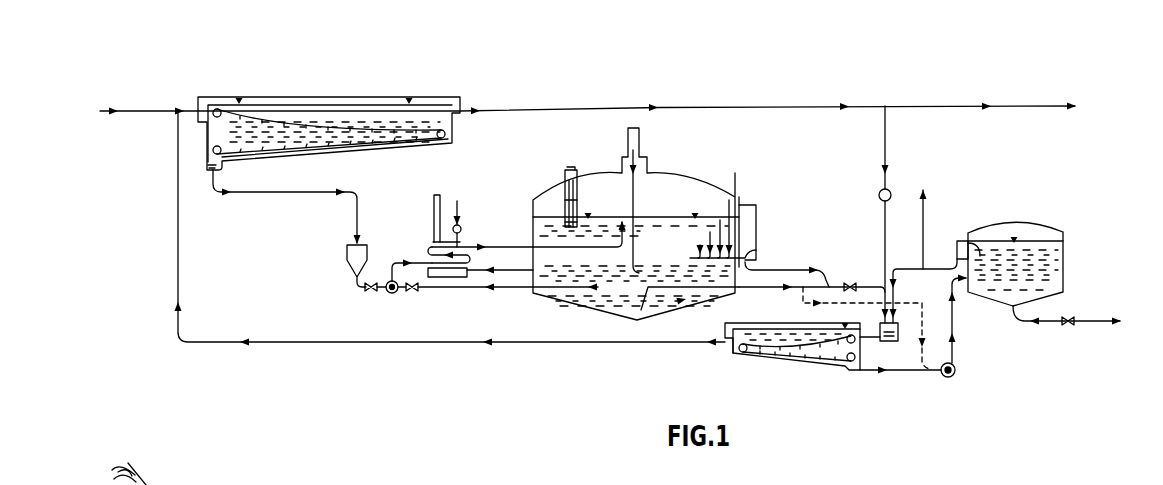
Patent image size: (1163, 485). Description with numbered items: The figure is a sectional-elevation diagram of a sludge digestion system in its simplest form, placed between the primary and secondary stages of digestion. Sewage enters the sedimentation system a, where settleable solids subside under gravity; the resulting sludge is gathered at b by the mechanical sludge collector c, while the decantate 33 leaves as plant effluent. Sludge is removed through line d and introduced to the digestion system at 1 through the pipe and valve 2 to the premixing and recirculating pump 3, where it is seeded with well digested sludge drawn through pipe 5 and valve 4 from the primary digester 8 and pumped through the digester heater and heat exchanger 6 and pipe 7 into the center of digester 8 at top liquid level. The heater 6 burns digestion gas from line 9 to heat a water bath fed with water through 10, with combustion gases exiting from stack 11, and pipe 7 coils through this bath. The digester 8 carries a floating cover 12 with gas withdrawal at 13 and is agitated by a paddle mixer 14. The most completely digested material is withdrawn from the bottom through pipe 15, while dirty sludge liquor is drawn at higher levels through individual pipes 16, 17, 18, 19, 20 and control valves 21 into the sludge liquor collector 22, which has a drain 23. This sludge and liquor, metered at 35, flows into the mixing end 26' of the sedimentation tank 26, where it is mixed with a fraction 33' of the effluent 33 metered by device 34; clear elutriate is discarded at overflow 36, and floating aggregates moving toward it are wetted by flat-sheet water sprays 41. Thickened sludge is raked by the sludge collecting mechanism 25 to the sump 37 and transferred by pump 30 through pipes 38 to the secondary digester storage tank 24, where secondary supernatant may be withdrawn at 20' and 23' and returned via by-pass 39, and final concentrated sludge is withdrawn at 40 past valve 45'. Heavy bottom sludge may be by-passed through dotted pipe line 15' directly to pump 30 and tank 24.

The sedimentation system a is at (279, 103).
The sludge gathering point b is at (222, 174).
The mechanical sludge collector c is at (330, 150).
The sludge line d is at (294, 207).
The digestion system inlet 1 is at (349, 264).
The pipe and valve 2 is at (375, 295).
The premixing and recirculating pump 3 is at (396, 294).
The valve 4 is at (412, 295).
The pipe 5 is at (490, 291).
The digester heater and heat exchanger 6 is at (443, 253).
The pipe 7 is at (520, 246).
The primary or active digester 8 is at (532, 225).
The digestion gas line 9 is at (500, 263).
The water feed 10 is at (457, 216).
The stack 11 is at (432, 201).
The floating cover 12 is at (694, 183).
The gas withdrawal 13 is at (643, 165).
The paddle mixer 14 is at (578, 201).
The bottom withdrawal pipe 15 is at (763, 293).
The by-pass pipe line 15' is at (871, 327).
The sludge liquor withdrawal pipe 16 is at (660, 258).
The sludge liquor withdrawal pipe 17 is at (692, 248).
The sludge liquor withdrawal pipe 18 is at (703, 243).
The sludge liquor withdrawal pipe 19 is at (713, 236).
The sludge liquor withdrawal pipe 20 is at (720, 229).
The secondary supernatant withdrawal 20' is at (1015, 234).
The control valves 21 is at (756, 250).
The sludge liquor collector 22 is at (758, 230).
The drain 23 is at (787, 270).
The secondary supernatant withdrawal 23' is at (935, 282).
The secondary digester storage tank 24 is at (1066, 273).
The sludge collecting mechanism 25 is at (829, 364).
The sedimentation tank 26 is at (792, 355).
The mixing end 26' is at (880, 341).
The pump 30 is at (954, 378).
The decantate / plant effluent 33 is at (588, 101).
The effluent fraction 33' is at (874, 147).
The metering device 34 is at (874, 255).
The metering device 35 is at (857, 283).
The overflow 36 is at (450, 228).
The sedimentation tank sump 37 is at (862, 385).
The pipes 38 is at (919, 333).
The by-pass 39 is at (935, 228).
The secondary sludge withdrawal 40 is at (1101, 338).
The flat-sheet water sprays 41 is at (762, 315).
The valve 45' is at (1067, 312).